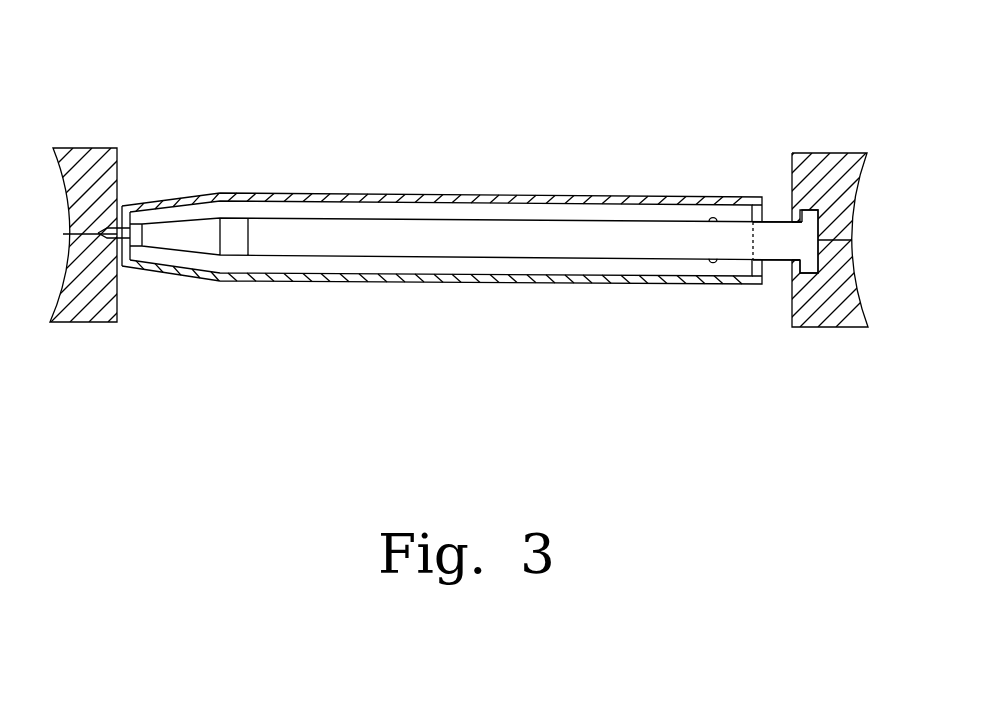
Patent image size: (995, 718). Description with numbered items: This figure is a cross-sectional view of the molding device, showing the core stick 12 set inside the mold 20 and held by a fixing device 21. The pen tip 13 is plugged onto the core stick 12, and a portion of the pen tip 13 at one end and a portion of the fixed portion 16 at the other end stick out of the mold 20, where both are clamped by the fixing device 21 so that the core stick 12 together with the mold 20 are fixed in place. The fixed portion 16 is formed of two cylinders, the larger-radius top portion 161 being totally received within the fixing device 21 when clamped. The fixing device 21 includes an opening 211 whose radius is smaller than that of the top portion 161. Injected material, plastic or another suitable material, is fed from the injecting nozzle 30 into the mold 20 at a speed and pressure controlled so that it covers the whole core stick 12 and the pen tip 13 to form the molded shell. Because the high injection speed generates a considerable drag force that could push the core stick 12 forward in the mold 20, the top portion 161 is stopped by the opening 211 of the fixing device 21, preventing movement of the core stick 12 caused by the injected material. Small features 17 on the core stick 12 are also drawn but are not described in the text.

The core stick 12 is at (433, 219).
The pen tip 13 is at (122, 210).
The fixed portion 16 is at (775, 240).
The top portion 161 is at (805, 273).
The bumps 17 is at (713, 220).
The mold 20 is at (557, 195).
The fixing device 21 is at (83, 173).
The opening 211 is at (790, 203).
The injecting nozzle 30 is at (767, 220).